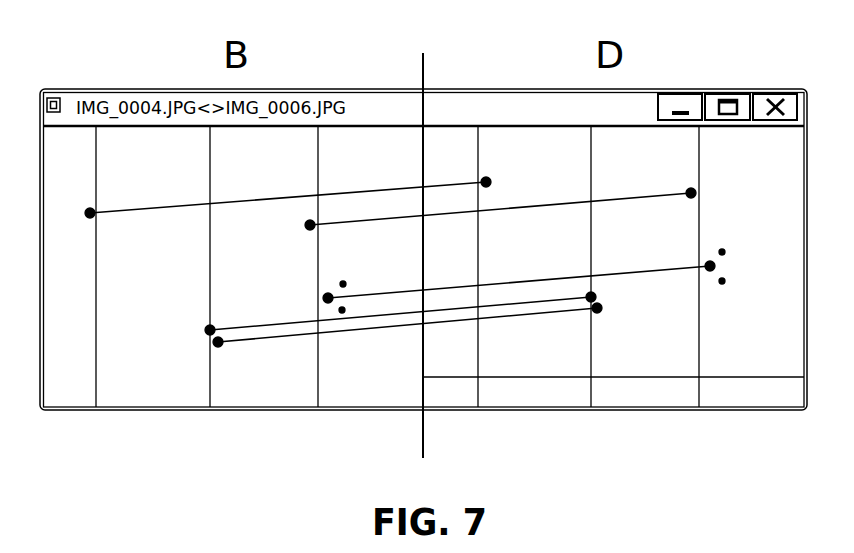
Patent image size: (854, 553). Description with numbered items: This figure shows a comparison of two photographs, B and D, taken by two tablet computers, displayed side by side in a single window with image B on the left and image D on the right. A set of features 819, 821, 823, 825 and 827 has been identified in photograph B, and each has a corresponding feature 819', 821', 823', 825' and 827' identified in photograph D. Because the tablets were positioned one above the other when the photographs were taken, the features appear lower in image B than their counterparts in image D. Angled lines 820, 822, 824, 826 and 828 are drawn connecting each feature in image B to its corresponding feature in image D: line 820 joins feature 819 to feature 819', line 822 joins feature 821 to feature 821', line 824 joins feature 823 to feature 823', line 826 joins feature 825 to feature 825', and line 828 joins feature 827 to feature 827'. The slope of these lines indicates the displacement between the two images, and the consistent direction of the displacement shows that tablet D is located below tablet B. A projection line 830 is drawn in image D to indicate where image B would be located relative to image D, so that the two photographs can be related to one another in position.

The feature 819 is at (227, 302).
The corresponding feature 819' is at (633, 292).
The angled line 820 is at (453, 308).
The feature 821 is at (107, 187).
The corresponding feature 821' is at (509, 162).
The angled line 822 is at (331, 194).
The feature 823 is at (341, 276).
The corresponding feature 823' is at (751, 266).
The angled line 824 is at (567, 278).
The feature 825 is at (245, 367).
The corresponding feature 825' is at (613, 330).
The angled line 826 is at (505, 317).
The feature 827 is at (270, 235).
The corresponding feature 827' is at (715, 174).
The angled line 828 is at (447, 214).
The projection line 830 is at (608, 378).